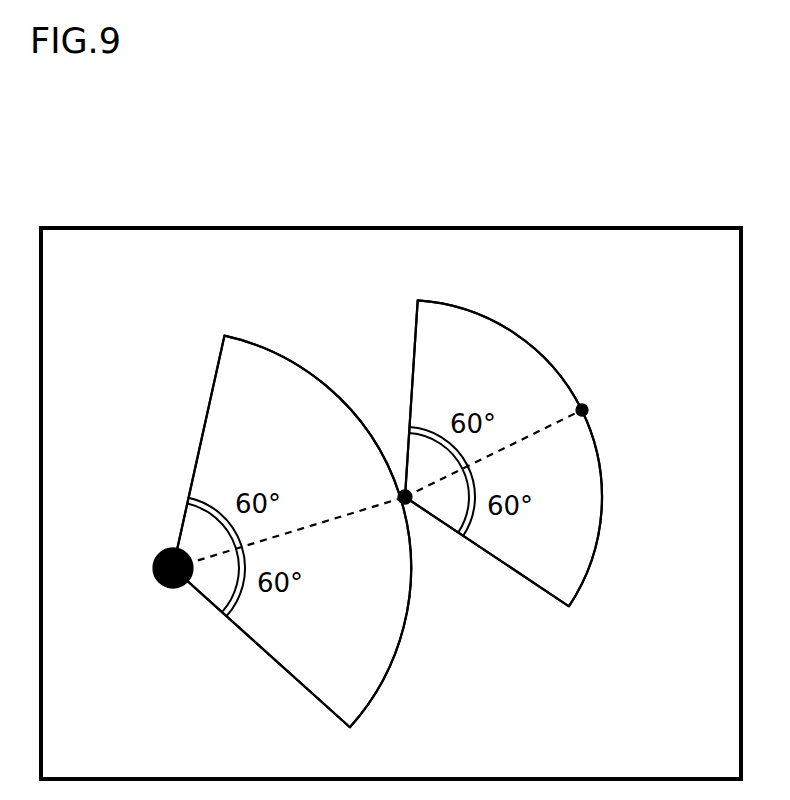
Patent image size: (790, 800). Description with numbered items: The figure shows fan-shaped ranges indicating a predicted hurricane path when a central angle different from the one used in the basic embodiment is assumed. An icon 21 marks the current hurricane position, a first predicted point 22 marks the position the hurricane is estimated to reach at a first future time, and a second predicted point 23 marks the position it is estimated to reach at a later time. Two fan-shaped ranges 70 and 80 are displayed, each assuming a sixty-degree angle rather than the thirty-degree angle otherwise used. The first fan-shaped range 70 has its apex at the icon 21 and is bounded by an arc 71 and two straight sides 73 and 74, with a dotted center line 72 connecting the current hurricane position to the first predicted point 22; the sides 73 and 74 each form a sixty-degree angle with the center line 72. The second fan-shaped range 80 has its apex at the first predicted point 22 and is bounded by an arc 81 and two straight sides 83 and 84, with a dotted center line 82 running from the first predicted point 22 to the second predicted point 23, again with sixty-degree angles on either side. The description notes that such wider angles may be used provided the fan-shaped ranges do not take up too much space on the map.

The icon 21 is at (176, 589).
The first predicted point 22 is at (402, 505).
The second predicted point 23 is at (588, 410).
The fan-shaped range 70 is at (266, 333).
The arc of first sector region 71 is at (411, 588).
The center line of first sector region 72 is at (323, 518).
The first side of first sector region 73 is at (203, 428).
The second side of first sector region 74 is at (288, 672).
The fan-shaped range 80 is at (537, 322).
The arc of second sector region 81 is at (598, 456).
The center line of second sector region 82 is at (522, 438).
The first side of second sector region 83 is at (412, 365).
The second side of second sector region 84 is at (535, 584).